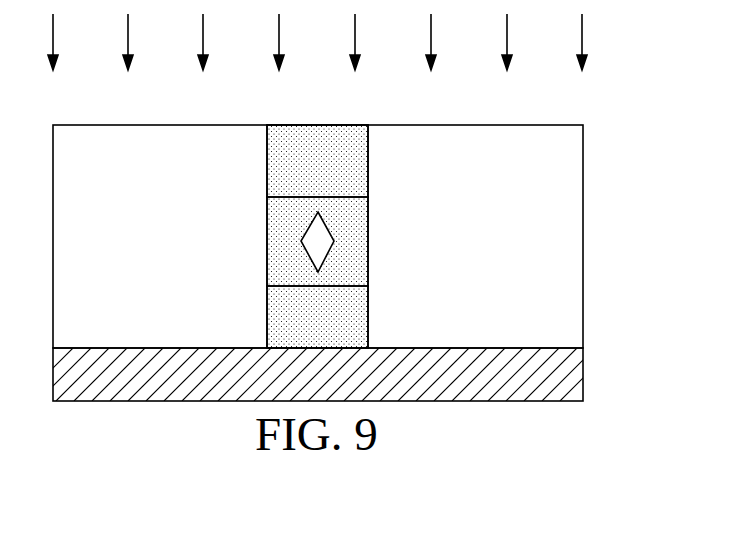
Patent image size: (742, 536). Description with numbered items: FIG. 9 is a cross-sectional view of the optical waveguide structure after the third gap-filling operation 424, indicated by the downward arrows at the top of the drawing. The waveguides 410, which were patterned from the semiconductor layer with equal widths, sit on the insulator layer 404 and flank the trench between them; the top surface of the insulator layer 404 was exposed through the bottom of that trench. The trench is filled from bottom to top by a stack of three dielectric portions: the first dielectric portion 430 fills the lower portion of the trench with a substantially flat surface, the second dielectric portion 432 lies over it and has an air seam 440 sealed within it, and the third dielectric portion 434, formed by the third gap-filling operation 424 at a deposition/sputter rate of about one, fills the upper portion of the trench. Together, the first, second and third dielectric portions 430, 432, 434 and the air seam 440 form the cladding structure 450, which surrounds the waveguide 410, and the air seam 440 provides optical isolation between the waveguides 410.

The insulator layer 404 is at (306, 200).
The waveguide 410 is at (161, 97).
The third gap-filling operation 424 is at (606, 36).
The first dielectric portion 430 is at (317, 317).
The second dielectric portion 432 is at (318, 241).
The third dielectric portion 434 is at (317, 161).
The air seam 440 is at (292, 234).
The cladding structure 450 is at (318, 188).